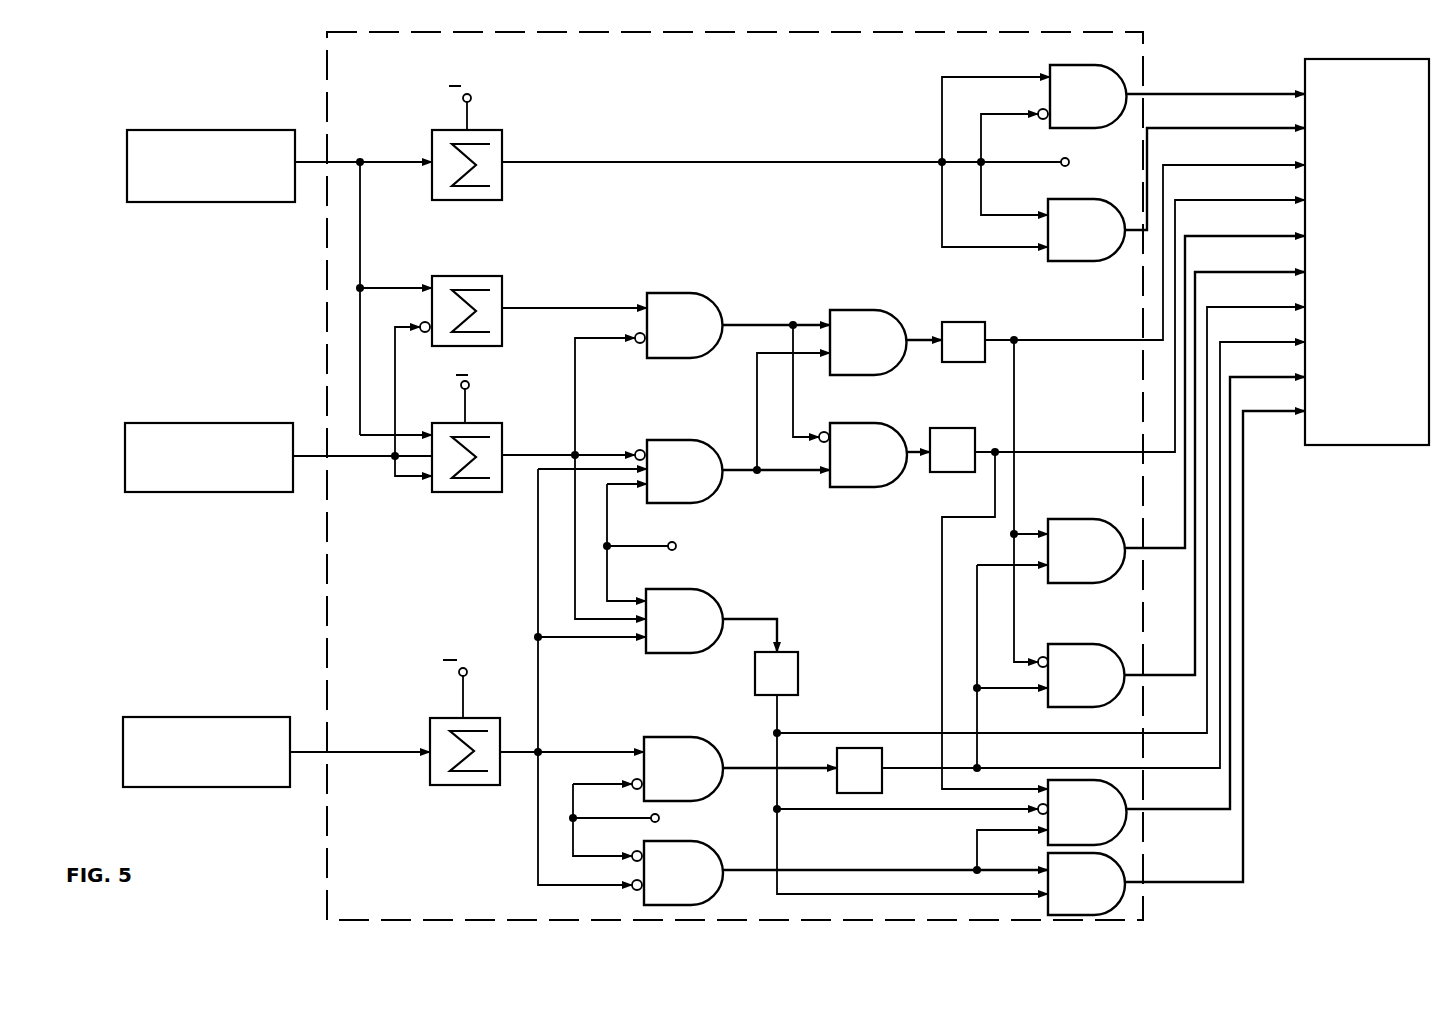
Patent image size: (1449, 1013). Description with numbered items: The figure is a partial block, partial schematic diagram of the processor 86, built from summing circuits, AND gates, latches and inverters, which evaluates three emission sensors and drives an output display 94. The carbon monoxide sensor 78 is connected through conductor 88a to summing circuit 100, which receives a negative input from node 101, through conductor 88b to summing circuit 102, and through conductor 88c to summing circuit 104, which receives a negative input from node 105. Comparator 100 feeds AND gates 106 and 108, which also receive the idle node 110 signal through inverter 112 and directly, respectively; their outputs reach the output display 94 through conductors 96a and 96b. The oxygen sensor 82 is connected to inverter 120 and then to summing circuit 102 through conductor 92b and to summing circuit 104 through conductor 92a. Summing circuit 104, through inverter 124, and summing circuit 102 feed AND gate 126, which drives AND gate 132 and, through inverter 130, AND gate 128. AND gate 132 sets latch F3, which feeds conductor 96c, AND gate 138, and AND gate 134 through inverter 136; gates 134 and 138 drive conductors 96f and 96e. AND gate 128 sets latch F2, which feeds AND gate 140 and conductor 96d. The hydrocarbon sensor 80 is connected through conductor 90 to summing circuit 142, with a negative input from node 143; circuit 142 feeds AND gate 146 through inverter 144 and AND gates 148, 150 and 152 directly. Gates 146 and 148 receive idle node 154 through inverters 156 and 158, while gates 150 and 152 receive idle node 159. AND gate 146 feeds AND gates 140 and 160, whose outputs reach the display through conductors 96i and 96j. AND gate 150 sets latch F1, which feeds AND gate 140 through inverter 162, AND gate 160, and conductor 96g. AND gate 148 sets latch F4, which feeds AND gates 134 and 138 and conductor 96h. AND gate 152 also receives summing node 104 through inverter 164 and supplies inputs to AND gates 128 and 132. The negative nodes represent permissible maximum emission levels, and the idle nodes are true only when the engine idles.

The carbon monoxide sensor 78 is at (260, 130).
The hydrocarbon sensor 80 is at (247, 717).
The oxygen sensor 82 is at (255, 423).
The processor 86 is at (1150, 48).
The conductor 88a is at (385, 160).
The conductor 88b is at (372, 286).
The conductor 88c is at (404, 433).
The conductor 90 is at (348, 750).
The conductor 92a is at (398, 480).
The conductor 92b is at (413, 328).
The output display 94 is at (1365, 59).
The conductor 96a is at (1228, 90).
The conductor 96b is at (1228, 124).
The conductor 96c is at (1228, 161).
The conductor 96d is at (1228, 196).
The conductor 96e is at (1228, 232).
The conductor 96f is at (1228, 268).
The conductor 96g is at (1228, 303).
The conductor 96h is at (1228, 338).
The conductor 96i is at (1228, 373).
The conductor 96j is at (1280, 408).
The summing circuit 100 is at (502, 194).
The node 101 is at (471, 97).
The summing circuit 102 is at (502, 278).
The summing circuit 104 is at (465, 492).
The node 105 is at (469, 384).
The AND gate 106 is at (1083, 65).
The AND gate 108 is at (1098, 261).
The idle node 110 is at (1069, 162).
The inverter 112 is at (1039, 118).
The inverter 120 is at (425, 333).
The inverter 124 is at (637, 344).
The AND gate 126 is at (680, 293).
The AND gate 128 is at (855, 487).
The inverter 130 is at (822, 431).
The AND gate 132 is at (852, 310).
The AND gate 134 is at (1068, 644).
The inverter 136 is at (1038, 667).
The AND gate 138 is at (1063, 519).
The AND gate 140 is at (1128, 798).
The summing circuit 142 is at (463, 785).
The node 143 is at (466, 669).
The inverter 144 is at (633, 889).
The AND gate 146 is at (718, 848).
The AND gate 148 is at (686, 737).
The AND gate 150 is at (710, 589).
The AND gate 152 is at (676, 440).
The idle node 154 is at (659, 817).
The inverter 156 is at (633, 852).
The inverter 158 is at (632, 781).
The idle node 159 is at (676, 544).
The AND gate 160 is at (1128, 880).
The inverter 162 is at (1038, 813).
The inverter 164 is at (636, 450).
The latch F1 is at (798, 668).
The latch F2 is at (950, 428).
The latch F3 is at (962, 322).
The latch F4 is at (882, 758).